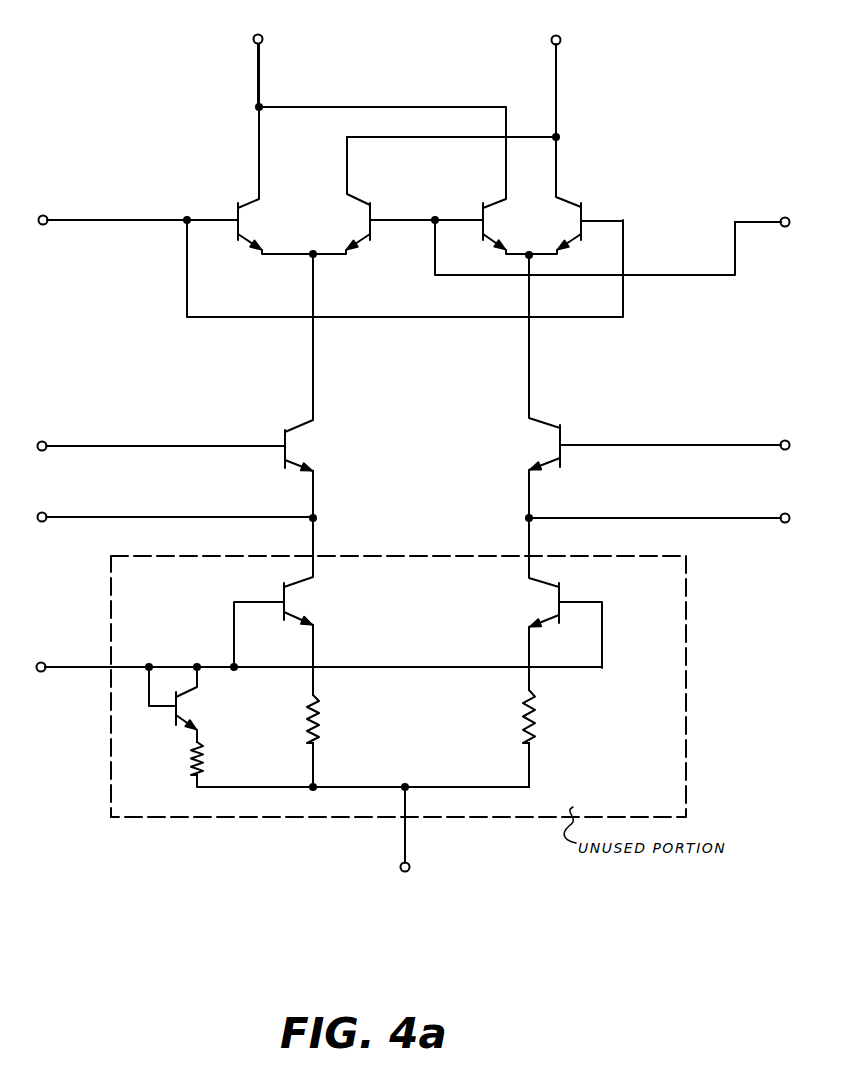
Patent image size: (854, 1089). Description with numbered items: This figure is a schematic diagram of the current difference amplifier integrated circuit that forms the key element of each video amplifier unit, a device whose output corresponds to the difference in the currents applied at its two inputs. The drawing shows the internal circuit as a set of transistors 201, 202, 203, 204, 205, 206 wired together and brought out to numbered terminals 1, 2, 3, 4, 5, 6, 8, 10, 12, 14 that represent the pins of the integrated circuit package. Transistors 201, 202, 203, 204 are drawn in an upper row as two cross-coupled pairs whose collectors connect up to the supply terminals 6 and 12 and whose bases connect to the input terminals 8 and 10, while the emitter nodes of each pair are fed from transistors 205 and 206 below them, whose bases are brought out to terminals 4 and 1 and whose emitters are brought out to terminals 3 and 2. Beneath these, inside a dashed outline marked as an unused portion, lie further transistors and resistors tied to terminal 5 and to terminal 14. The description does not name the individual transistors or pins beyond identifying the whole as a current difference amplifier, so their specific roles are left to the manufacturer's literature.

The transistor 201 is at (236, 207).
The transistor 202 is at (377, 204).
The transistor 203 is at (477, 207).
The transistor 204 is at (586, 208).
The transistor 205 is at (282, 434).
The transistor 206 is at (566, 437).
The terminal 1 is at (710, 446).
The terminal 2 is at (676, 519).
The terminal 3 is at (162, 517).
The terminal 4 is at (131, 446).
The terminal 5 is at (79, 667).
The terminal 6 is at (260, 59).
The terminal 8 is at (103, 220).
The terminal 10 is at (780, 223).
The terminal 12 is at (559, 73).
The terminal 14 is at (403, 845).